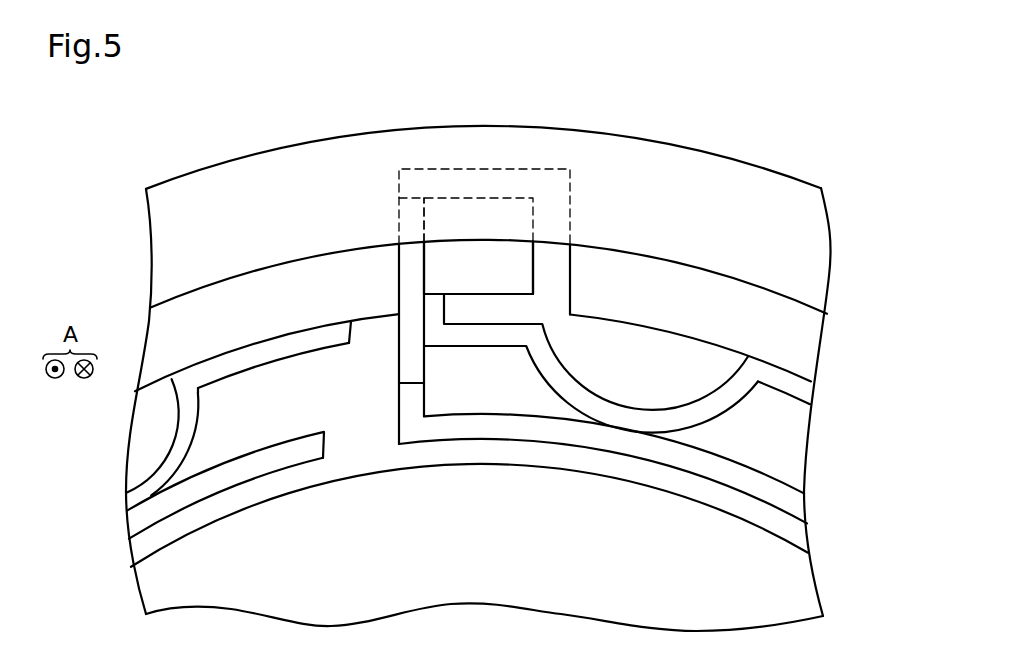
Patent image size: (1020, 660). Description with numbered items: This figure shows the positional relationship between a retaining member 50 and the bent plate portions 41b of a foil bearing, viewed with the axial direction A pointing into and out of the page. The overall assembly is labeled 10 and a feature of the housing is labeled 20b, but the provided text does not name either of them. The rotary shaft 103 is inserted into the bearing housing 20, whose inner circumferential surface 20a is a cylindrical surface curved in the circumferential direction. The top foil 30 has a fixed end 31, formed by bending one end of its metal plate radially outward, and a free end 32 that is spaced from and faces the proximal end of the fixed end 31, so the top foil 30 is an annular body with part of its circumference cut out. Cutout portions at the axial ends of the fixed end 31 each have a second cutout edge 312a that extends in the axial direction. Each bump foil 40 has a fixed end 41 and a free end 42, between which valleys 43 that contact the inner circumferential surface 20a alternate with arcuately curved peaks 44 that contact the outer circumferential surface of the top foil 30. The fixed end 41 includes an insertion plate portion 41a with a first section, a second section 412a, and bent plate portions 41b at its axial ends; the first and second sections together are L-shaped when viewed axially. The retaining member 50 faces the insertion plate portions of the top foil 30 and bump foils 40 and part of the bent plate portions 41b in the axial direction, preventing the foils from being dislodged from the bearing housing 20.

The electronic device 10 is at (625, 107).
The bearing housing 20 is at (790, 294).
The inner circumferential surface 20a is at (730, 356).
The opening of insulating layer 20b is at (497, 169).
The top foil 30 is at (583, 447).
The fixed end 31 is at (397, 348).
The second cutout edge 312a is at (413, 381).
The free end 32 is at (307, 432).
The bump foil 40 is at (683, 437).
The fixed end 41 is at (478, 214).
The insertion plate portion 41a is at (414, 314).
The bent plate portions 41b is at (533, 265).
The second section 412a is at (423, 222).
The free end 42 is at (300, 320).
The valleys 43 is at (773, 363).
The peaks 44 is at (697, 422).
The retaining member 50 is at (276, 183).
The rotary shaft 103 is at (782, 537).